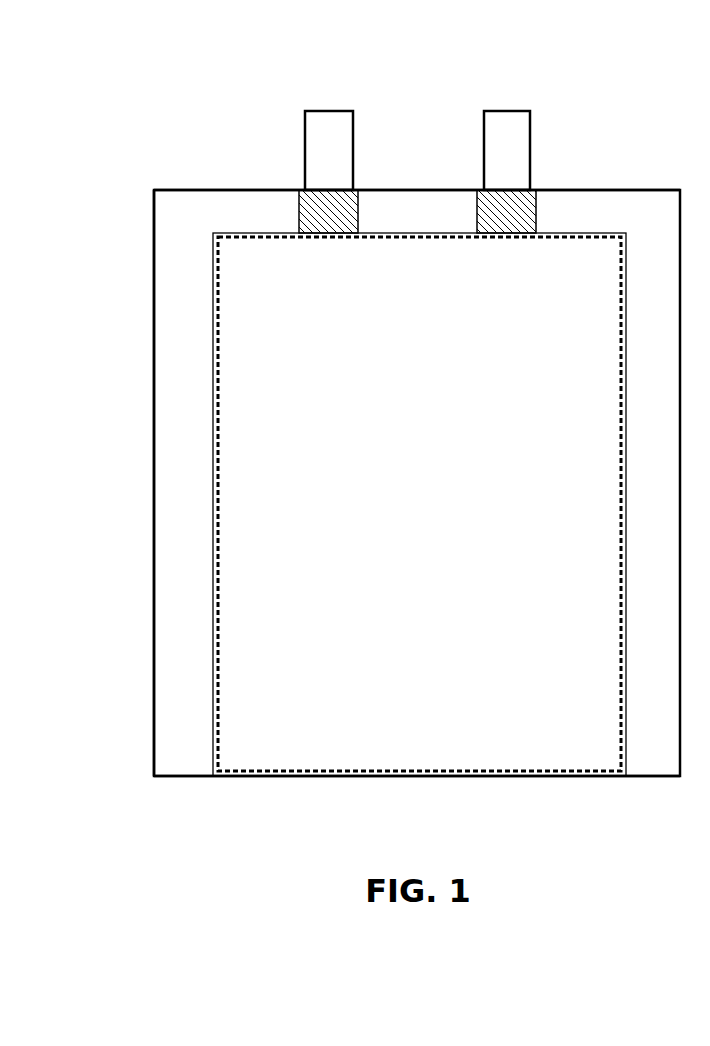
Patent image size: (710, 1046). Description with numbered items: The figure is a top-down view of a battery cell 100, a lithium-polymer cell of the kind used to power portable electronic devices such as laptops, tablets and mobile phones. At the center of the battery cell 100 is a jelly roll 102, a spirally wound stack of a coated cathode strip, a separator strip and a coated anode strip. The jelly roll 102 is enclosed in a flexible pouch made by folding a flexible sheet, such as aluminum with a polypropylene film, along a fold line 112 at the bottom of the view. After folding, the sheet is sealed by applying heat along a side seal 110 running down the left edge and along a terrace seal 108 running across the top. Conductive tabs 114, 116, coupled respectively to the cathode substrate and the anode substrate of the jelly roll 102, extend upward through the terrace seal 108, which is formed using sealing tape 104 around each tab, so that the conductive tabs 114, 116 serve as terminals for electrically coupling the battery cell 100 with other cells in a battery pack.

The battery cell 100 is at (154, 190).
The jelly roll 102 is at (419, 504).
The sealing tape 104 is at (335, 235).
The terrace seal 108 is at (568, 190).
The side seal 110 is at (154, 473).
The fold line 112 is at (493, 776).
The conductive tabs 114 is at (332, 111).
The conductive tabs 116 is at (503, 111).